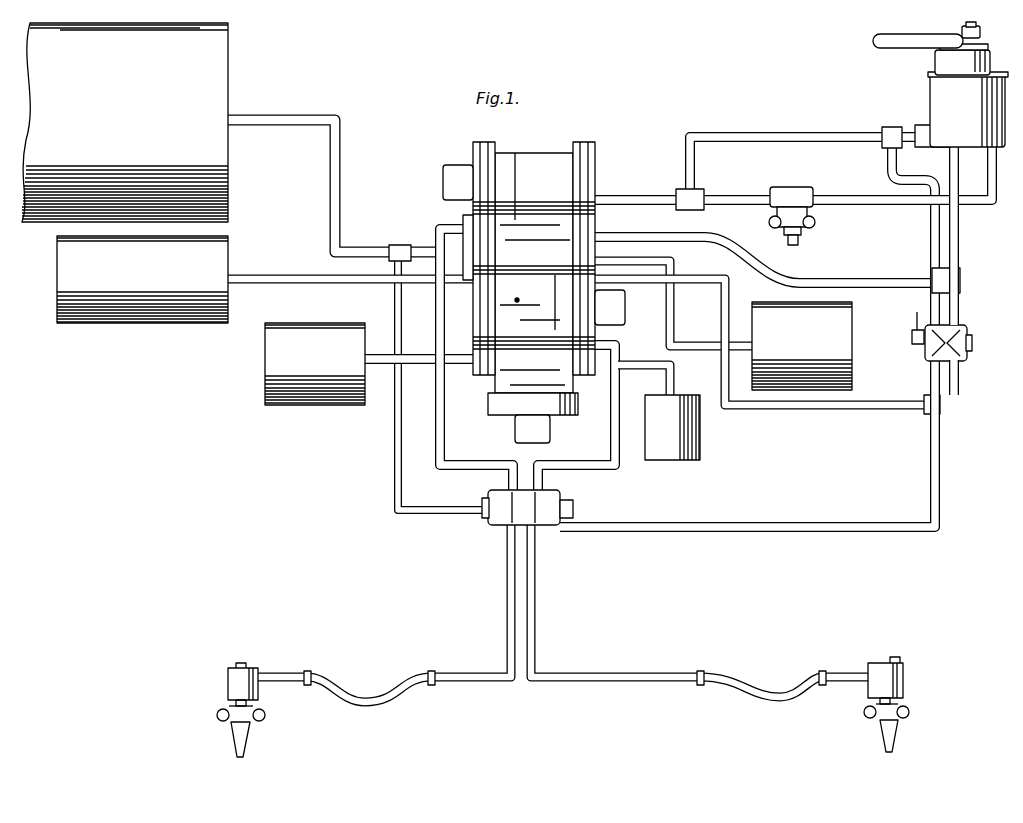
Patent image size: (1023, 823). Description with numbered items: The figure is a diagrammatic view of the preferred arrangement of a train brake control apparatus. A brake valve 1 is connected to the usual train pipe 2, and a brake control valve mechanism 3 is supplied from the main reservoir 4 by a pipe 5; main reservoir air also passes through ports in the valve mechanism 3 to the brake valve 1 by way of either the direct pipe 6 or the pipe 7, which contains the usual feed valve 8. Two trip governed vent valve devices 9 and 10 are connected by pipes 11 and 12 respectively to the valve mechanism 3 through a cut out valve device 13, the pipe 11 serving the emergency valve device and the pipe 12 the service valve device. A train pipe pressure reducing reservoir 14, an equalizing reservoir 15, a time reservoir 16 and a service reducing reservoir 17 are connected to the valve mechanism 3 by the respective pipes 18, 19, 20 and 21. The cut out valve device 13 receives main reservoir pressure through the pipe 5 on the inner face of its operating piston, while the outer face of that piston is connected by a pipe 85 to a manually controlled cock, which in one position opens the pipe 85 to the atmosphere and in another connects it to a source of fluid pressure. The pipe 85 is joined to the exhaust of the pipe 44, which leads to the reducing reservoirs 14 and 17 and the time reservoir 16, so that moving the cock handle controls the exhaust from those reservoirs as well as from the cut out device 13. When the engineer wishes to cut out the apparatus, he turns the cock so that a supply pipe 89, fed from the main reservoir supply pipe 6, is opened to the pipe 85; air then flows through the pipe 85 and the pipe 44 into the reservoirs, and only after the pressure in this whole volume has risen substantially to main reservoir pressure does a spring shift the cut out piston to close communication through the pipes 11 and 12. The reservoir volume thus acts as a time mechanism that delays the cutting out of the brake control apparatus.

The brake valve 1 is at (934, 90).
The train pipe 2 is at (958, 316).
The brake control valve mechanism 3 is at (531, 156).
The main reservoir 4 is at (214, 73).
The pipe 5 is at (344, 160).
The direct pipe 6 is at (618, 192).
The pipe 7 is at (719, 196).
The feed valve 8 is at (789, 188).
The trip governed vent valve device 9 is at (256, 664).
The trip governed vent valve device 10 is at (880, 663).
The pipe 11 is at (452, 431).
The pipe 12 is at (611, 432).
The cut out valve device 13 is at (560, 493).
The train pipe pressure reducing reservoir 14 is at (228, 246).
The equalizing reservoir 15 is at (265, 364).
The time reservoir 16 is at (848, 322).
The service reducing reservoir 17 is at (668, 450).
The pipe 18 is at (290, 277).
The pipe 19 is at (411, 355).
The pipe 20 is at (682, 325).
The pipe 21 is at (643, 351).
The exhaust outlet pipe 44 is at (801, 408).
The pipe 85 is at (928, 499).
The supply pipe 89 is at (933, 258).